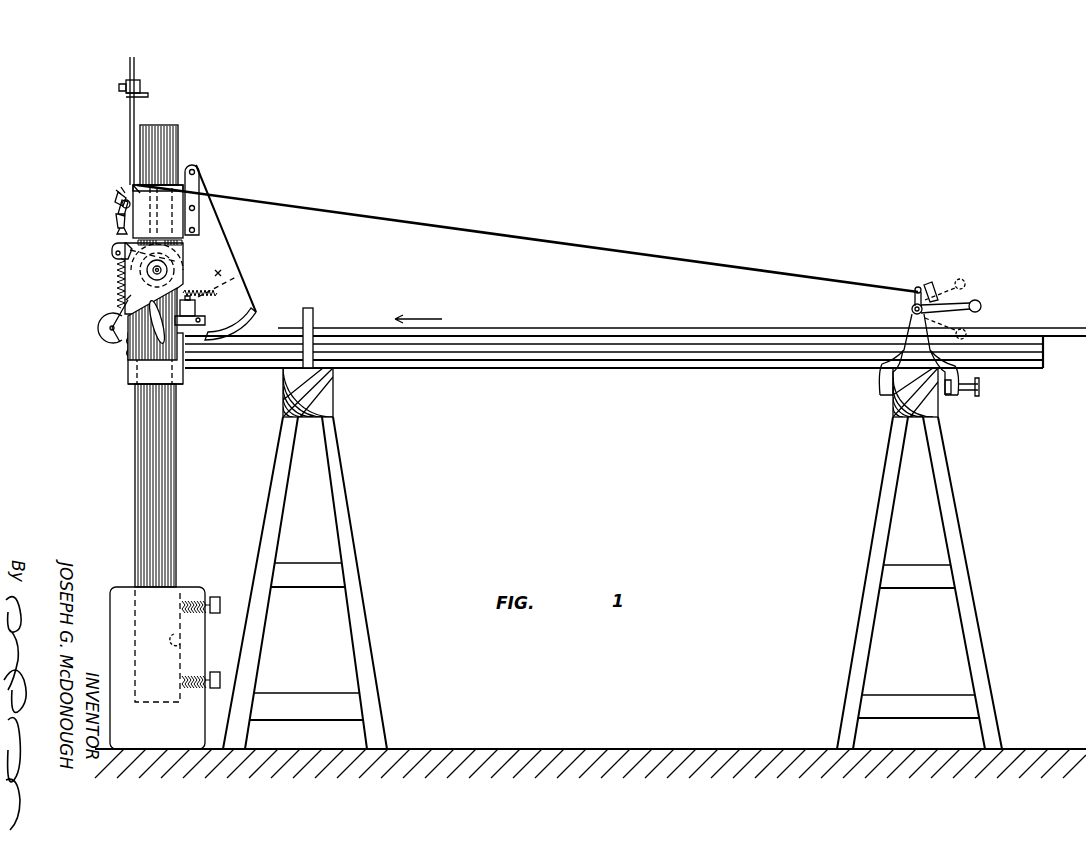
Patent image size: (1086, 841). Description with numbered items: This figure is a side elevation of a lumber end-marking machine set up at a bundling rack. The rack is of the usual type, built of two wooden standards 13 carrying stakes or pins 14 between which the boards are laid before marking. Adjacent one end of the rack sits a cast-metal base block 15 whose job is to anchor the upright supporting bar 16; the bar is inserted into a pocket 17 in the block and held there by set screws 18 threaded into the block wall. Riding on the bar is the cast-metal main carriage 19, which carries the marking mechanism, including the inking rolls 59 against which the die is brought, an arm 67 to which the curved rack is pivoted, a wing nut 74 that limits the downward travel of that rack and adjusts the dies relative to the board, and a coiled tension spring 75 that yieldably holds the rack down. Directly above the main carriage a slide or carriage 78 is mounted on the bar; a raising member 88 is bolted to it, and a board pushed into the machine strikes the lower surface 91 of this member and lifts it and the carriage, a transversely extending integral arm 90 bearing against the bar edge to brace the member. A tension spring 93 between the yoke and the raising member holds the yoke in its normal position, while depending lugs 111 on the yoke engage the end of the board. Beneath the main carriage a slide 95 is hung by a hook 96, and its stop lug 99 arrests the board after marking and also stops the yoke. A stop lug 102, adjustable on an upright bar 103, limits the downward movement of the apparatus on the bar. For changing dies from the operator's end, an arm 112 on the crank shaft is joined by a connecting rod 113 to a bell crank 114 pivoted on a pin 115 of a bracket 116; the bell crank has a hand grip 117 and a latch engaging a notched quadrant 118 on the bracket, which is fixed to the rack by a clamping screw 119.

The wooden standards 13 is at (350, 490).
The stakes or pins 14 is at (313, 321).
The base block 15 is at (120, 590).
The upright supporting bar 16 is at (160, 136).
The pocket 17 is at (180, 645).
The set screws 18 is at (221, 600).
The main carriage 19 is at (147, 262).
The inking rolls 59 is at (107, 330).
The arm 67 is at (112, 253).
The wing nut 74 is at (120, 201).
The coiled tension spring 75 is at (118, 299).
The slide or carriage 78 is at (148, 221).
The raising member 88 is at (230, 293).
The transversely extending integral arm 90 is at (195, 314).
The lower surface 91 is at (236, 320).
The tension spring 93 is at (238, 276).
The slide 95 is at (156, 372).
The hook 96 is at (128, 304).
The stop lug 99 is at (185, 352).
The stop lug 102 is at (147, 92).
The upright bar 103 is at (140, 63).
The depending lugs 111 is at (125, 351).
The arm 112 is at (135, 193).
The connecting rod 113 is at (425, 222).
The bell crank 114 is at (914, 291).
The pin 115 is at (911, 309).
The bracket 116 is at (910, 330).
The hand grip 117 is at (980, 303).
The notched quadrant 118 is at (933, 288).
The clamping screw 119 is at (975, 392).